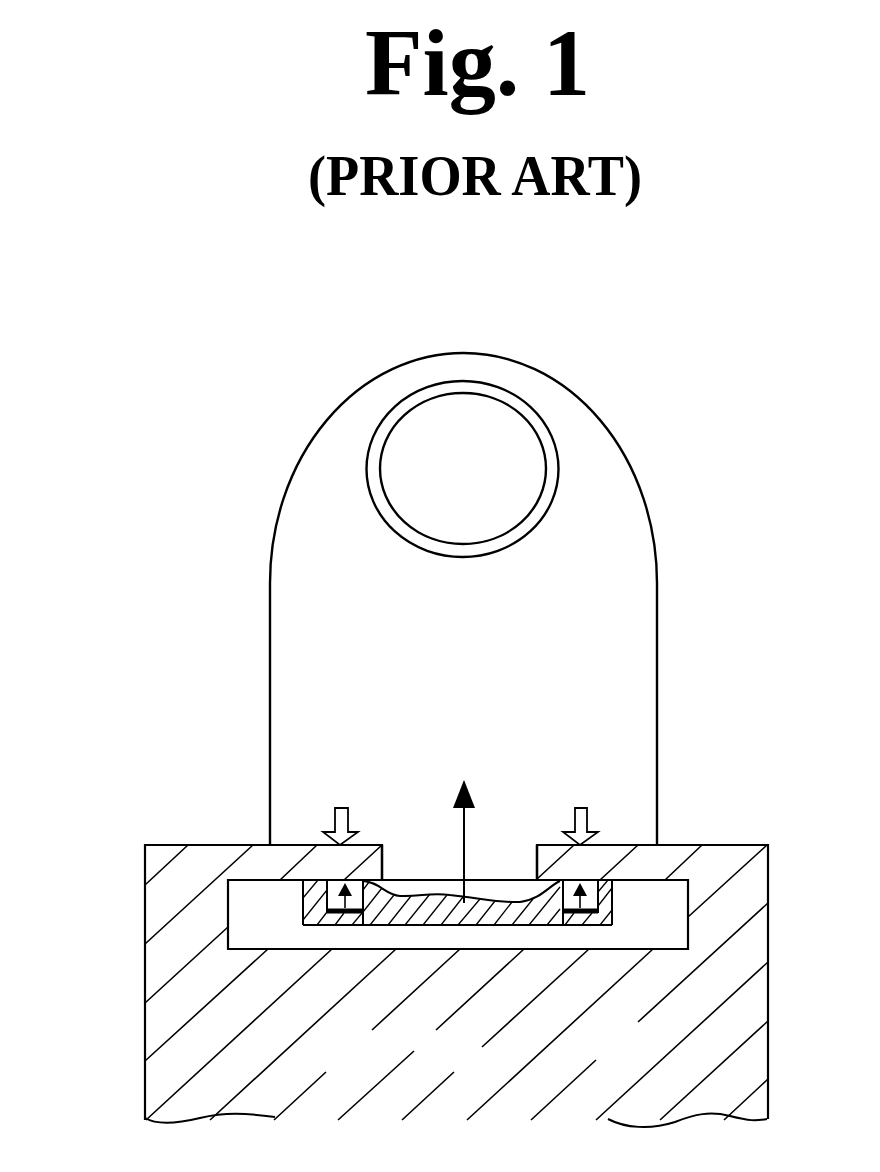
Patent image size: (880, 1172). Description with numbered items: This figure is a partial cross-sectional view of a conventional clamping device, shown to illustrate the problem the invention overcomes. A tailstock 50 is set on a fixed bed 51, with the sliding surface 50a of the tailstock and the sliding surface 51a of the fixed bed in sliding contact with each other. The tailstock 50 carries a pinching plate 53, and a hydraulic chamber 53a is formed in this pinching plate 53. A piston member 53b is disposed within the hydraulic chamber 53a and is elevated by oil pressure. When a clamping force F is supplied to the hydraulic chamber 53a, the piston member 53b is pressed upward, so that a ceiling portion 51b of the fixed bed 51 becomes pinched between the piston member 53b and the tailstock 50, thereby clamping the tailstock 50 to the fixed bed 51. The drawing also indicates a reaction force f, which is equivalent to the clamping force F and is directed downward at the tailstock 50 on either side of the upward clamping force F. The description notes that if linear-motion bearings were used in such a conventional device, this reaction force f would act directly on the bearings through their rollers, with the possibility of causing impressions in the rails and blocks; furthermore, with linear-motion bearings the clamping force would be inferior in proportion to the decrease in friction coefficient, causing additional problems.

The tailstock 50 is at (307, 448).
The sliding surface 50a is at (609, 848).
The fixed bed 51 is at (145, 860).
The sliding surface 51a is at (213, 845).
The ceiling portion 51b is at (283, 862).
The pinching plate 53 is at (470, 975).
The hydraulic chamber 53a is at (328, 925).
The piston member 53b is at (384, 925).
The reaction force f is at (348, 812).
The clamping force F is at (467, 842).